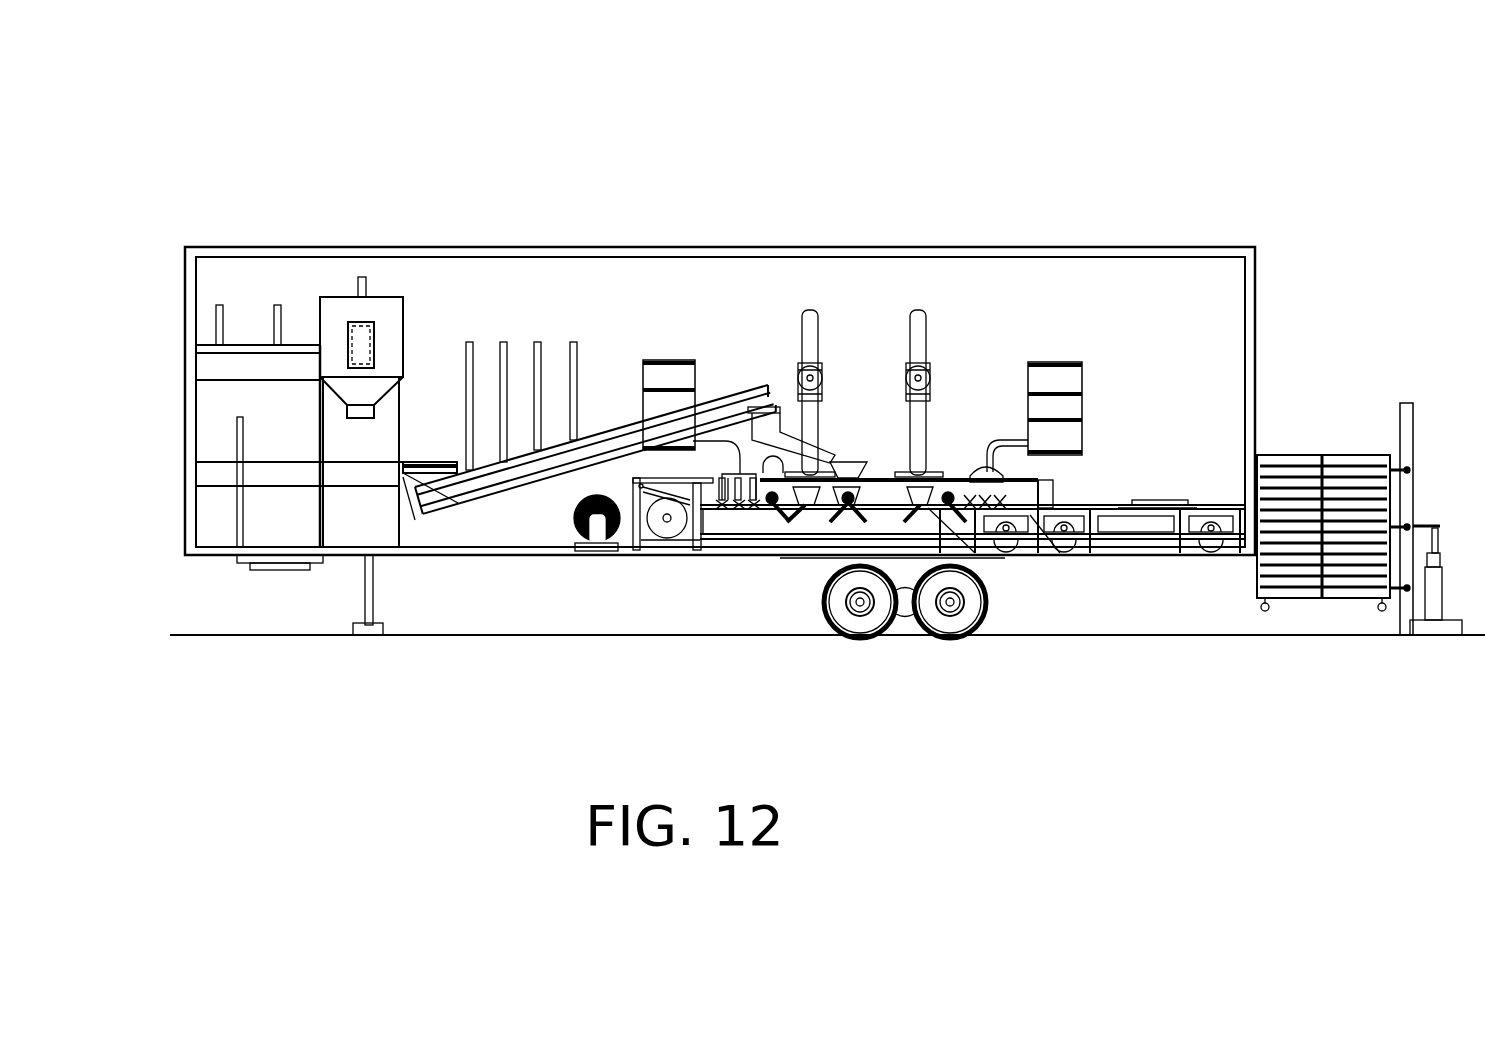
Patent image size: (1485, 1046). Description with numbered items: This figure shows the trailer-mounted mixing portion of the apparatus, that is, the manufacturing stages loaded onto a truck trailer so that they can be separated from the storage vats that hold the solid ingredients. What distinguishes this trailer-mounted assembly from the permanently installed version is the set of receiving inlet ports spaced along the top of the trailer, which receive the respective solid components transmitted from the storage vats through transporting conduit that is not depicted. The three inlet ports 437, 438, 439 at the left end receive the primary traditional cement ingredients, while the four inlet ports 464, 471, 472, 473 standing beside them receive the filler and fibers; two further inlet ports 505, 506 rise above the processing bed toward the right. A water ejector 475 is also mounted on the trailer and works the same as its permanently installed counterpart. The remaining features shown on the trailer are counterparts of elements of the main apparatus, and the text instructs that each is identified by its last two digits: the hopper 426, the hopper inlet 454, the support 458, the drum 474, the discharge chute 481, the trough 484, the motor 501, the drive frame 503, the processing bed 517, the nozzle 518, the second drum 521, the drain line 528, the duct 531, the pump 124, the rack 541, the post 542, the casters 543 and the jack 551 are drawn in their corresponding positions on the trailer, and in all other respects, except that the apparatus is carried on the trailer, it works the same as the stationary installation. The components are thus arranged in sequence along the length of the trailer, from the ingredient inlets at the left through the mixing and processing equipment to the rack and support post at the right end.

The pump 124 is at (985, 470).
The material hopper 426 is at (306, 433).
The inlet port 437 is at (367, 277).
The inlet port 438 is at (280, 303).
The inlet port 439 is at (220, 300).
The hopper inlet 454 is at (318, 298).
The support wall 458 is at (287, 483).
The inlet port 464 is at (468, 342).
The inlet port 471 is at (503, 342).
The inlet port 472 is at (538, 342).
The inlet port 473 is at (573, 342).
The drum 474 is at (607, 442).
The water ejector 475 is at (433, 477).
The discharge chute 481 is at (768, 383).
The trough 484 is at (835, 458).
The motor 501 is at (575, 540).
The drive frame 503 is at (640, 543).
The inlet port 505 is at (817, 315).
The inlet port 506 is at (927, 315).
The processing bed 517 is at (772, 505).
The nozzle 518 is at (928, 508).
The drum 521 is at (1082, 377).
The drain line 528 is at (1030, 515).
The duct 531 is at (1053, 500).
The rack 541 is at (1197, 507).
The post 542 is at (1413, 403).
The caster 543 is at (1258, 572).
The jack 551 is at (1427, 602).